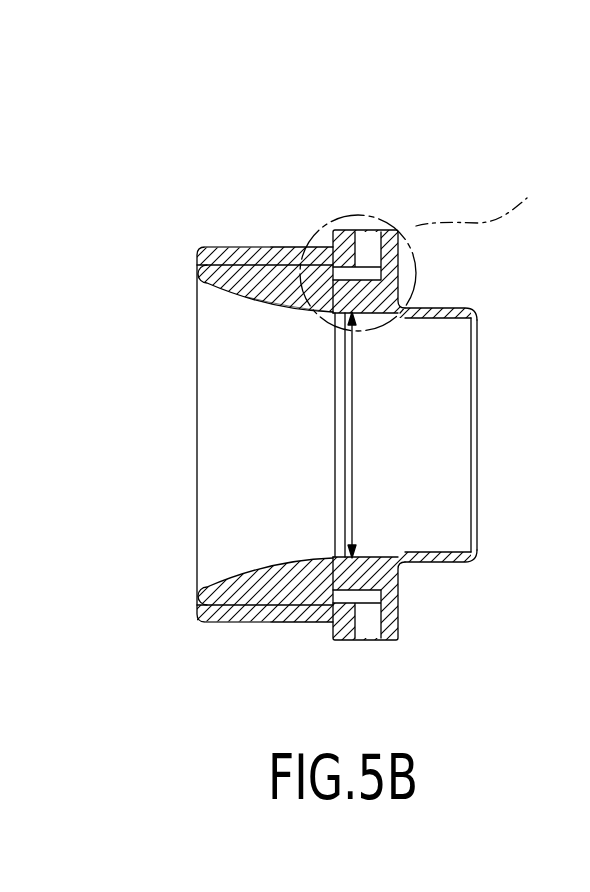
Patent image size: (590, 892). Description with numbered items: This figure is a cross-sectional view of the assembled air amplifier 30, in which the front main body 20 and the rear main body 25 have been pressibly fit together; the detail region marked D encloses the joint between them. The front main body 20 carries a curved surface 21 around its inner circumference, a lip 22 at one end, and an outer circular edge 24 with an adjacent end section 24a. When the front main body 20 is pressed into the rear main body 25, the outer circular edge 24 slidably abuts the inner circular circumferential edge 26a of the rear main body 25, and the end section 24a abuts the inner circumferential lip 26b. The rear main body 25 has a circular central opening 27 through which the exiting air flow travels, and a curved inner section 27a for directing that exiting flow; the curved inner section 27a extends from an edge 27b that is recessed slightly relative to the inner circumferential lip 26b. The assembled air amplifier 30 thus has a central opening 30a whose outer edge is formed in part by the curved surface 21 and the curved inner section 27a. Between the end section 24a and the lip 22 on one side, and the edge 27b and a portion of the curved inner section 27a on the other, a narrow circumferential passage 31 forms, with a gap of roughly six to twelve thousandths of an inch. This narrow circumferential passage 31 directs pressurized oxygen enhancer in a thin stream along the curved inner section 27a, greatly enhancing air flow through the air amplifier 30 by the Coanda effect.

The front main body 20 is at (246, 287).
The curved surface 21 is at (242, 284).
The lip 22 is at (337, 552).
The outer circular edge 24 is at (207, 282).
The end section 24a is at (330, 300).
The rear main body 25 is at (393, 228).
The inner circular circumferential edge 26a is at (228, 247).
The inner circumferential lip 26b is at (330, 258).
The circular central opening 27 is at (398, 622).
The curved inner section 27a is at (430, 319).
The edge 27b is at (300, 318).
The air amplifier 30 is at (463, 174).
The central opening 30a is at (213, 478).
The narrow circumferential passage 31 is at (353, 548).
The detail circle D is at (422, 250).